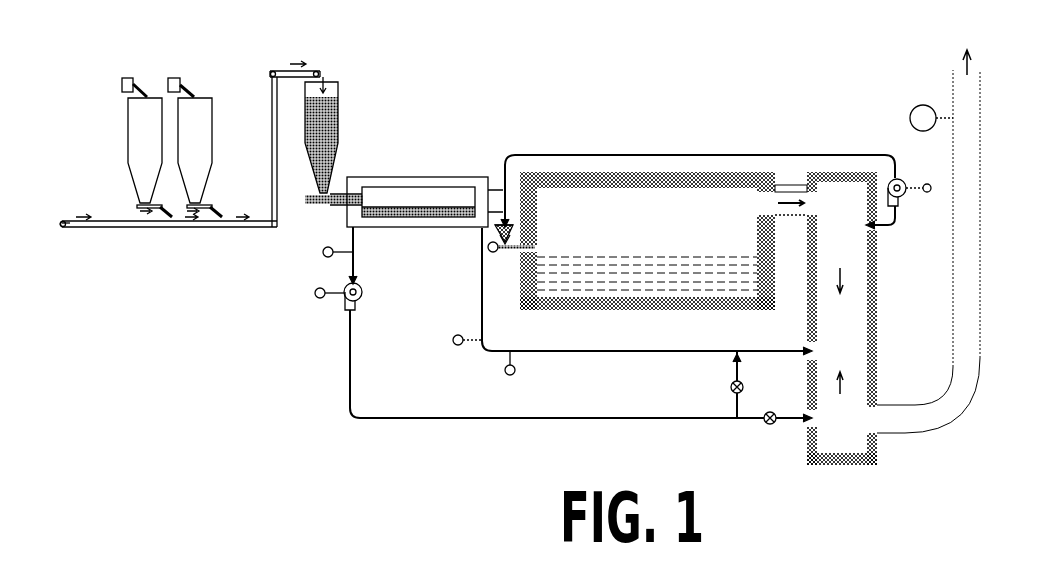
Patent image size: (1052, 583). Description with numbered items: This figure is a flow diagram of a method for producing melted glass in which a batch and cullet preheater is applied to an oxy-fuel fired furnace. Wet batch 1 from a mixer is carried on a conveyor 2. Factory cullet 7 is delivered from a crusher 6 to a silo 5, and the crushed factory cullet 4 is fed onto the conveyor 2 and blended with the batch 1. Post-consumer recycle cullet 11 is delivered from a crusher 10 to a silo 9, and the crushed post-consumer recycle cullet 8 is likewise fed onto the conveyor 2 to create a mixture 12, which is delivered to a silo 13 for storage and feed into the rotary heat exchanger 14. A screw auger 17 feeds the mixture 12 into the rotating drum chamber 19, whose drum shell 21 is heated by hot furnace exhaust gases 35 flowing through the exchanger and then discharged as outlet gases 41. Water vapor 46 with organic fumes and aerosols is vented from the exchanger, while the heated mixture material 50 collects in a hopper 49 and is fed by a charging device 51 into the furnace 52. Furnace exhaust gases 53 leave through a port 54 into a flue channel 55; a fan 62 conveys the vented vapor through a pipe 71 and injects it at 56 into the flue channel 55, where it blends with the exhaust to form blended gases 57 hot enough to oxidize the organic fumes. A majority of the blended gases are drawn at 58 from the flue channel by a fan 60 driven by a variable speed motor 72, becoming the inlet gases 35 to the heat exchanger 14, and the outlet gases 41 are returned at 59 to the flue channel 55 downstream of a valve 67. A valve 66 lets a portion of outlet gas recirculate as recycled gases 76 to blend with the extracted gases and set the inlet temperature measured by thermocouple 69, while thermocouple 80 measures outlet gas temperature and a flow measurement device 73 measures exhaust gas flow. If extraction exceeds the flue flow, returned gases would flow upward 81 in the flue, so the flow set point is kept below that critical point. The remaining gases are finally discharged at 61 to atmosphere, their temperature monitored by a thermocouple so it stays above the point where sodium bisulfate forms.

The wet batch 1 is at (82, 215).
The conveyor 2 is at (138, 229).
The crushed factory cullet 4 is at (162, 217).
The silo 5 is at (152, 165).
The crusher 6 is at (122, 85).
The factory cullet 7 is at (122, 89).
The crushed post-consumer recycle cullet 8 is at (212, 205).
The silo 9 is at (193, 141).
The crusher 10 is at (176, 80).
The post-consumer recycle cullet 11 is at (185, 93).
The mixture 12 is at (300, 63).
The silo 13 is at (338, 118).
The rotary heat exchanger 14 is at (425, 181).
The screw auger 17 is at (335, 201).
The drum chamber 19 is at (445, 187).
The drum shell 21 is at (387, 177).
The hot furnace exhaust gases 35 is at (497, 227).
The outlet gases 41 is at (352, 241).
The water vapor 46 is at (503, 172).
The hopper 49 is at (500, 232).
The heated mixture material 50 is at (505, 241).
The charging device 51 is at (517, 250).
The furnace 52 is at (565, 175).
The furnace exhaust gases 53 is at (790, 192).
The port 54 is at (782, 192).
The flue channel 55 is at (841, 177).
The injected gases 56 is at (897, 226).
The blended gases 57 is at (845, 280).
The gases drawn from flue channel 58 is at (808, 349).
The gases returned to flue channel 59 is at (805, 420).
The fan 60 is at (360, 303).
The discharge gases 61 is at (960, 58).
The fan 62 is at (905, 180).
The valve 66 is at (729, 387).
The valve 67 is at (763, 423).
The thermocouple 69 is at (453, 343).
The pipe 71 is at (618, 155).
The motor 72 is at (315, 296).
The flow measurement device 73 is at (504, 373).
The recycled gases 76 is at (730, 368).
The thermocouple 80 is at (323, 254).
The upward flow 81 is at (845, 388).